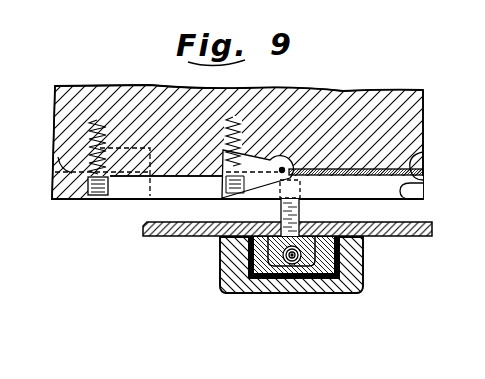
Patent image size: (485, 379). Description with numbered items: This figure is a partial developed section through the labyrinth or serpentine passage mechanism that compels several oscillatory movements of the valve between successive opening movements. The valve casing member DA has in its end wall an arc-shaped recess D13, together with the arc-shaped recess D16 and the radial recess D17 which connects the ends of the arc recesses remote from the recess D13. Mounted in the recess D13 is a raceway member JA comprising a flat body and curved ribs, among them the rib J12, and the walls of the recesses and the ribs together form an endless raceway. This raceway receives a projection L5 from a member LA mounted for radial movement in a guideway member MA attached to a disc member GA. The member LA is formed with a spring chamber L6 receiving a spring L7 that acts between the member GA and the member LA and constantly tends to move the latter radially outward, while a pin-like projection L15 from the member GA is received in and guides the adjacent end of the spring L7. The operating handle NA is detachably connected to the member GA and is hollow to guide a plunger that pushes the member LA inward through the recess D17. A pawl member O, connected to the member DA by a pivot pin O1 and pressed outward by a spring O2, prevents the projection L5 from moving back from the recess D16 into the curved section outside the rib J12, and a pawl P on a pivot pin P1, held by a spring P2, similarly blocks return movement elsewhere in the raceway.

The valve casing member DA is at (374, 97).
The spring P2 is at (88, 125).
The pivot pin P1 is at (57, 160).
The pawl P is at (97, 198).
The recess D16 is at (164, 192).
The recess D17 is at (92, 198).
The pawl member O is at (256, 182).
The pivot pin O1 is at (280, 180).
The spring O2 is at (208, 180).
The raceway member JA is at (422, 173).
The recess D13 is at (416, 160).
The rib J12 is at (422, 193).
The disc member GA is at (420, 237).
The projection L5 is at (300, 207).
The operating handle NA is at (220, 283).
The member LA is at (340, 291).
The pin-like projection L15 is at (283, 278).
The guideway member MA is at (262, 280).
The spring L7 is at (300, 266).
The spring chamber L6 is at (296, 264).